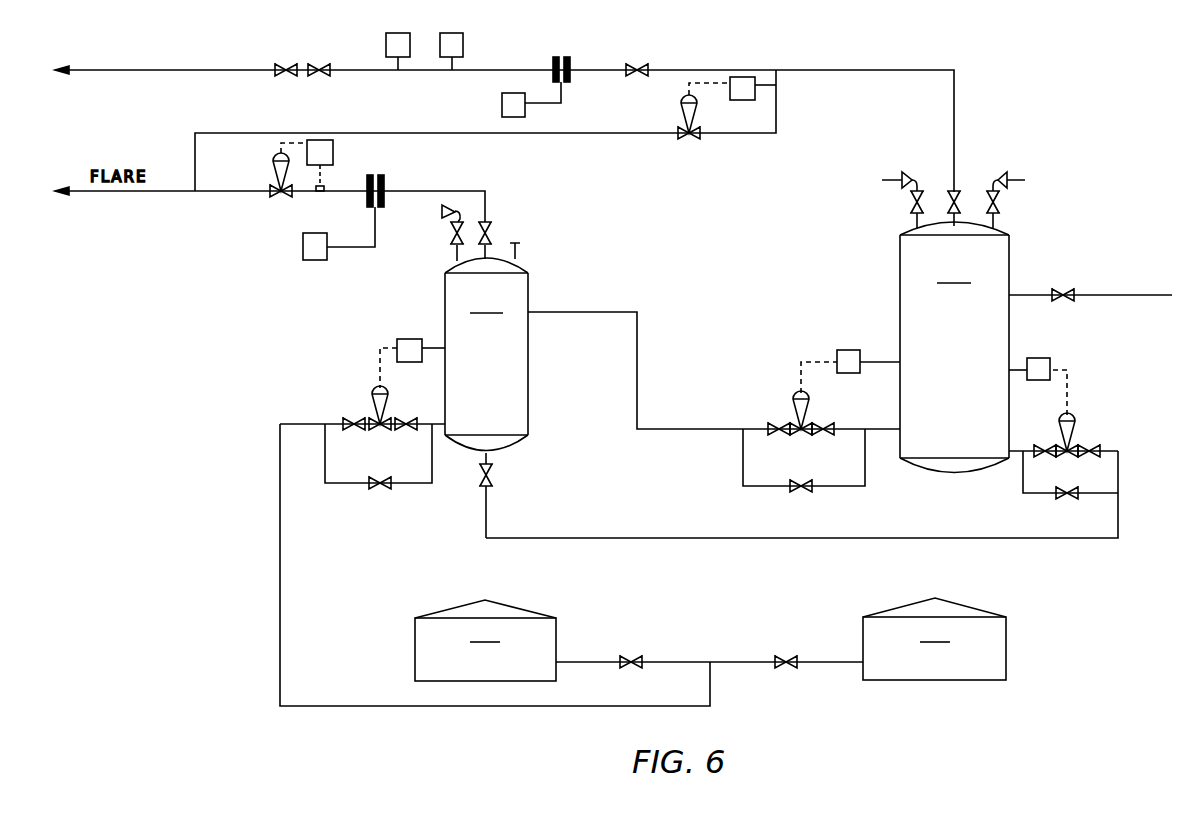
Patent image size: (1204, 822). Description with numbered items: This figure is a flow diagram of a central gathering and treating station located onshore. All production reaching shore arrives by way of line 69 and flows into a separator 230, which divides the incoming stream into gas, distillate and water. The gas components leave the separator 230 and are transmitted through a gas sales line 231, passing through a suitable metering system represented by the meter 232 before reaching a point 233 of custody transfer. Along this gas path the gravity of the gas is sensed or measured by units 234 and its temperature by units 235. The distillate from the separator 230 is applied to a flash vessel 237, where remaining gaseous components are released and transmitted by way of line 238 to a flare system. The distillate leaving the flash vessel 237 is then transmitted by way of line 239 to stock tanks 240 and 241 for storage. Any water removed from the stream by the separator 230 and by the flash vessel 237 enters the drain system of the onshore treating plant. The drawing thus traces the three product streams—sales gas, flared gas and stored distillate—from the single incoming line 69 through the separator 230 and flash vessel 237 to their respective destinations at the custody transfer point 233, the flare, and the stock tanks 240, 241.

The line 69 is at (1140, 297).
The separator 230 is at (953, 322).
The gas sales line 231 is at (828, 69).
The meter 232 is at (502, 110).
The point of custody transfer 233 is at (415, 72).
The units 234 is at (386, 50).
The units 235 is at (464, 52).
The flash vessel 237 is at (486, 398).
The line 238 is at (408, 191).
The line 239 is at (283, 569).
The stock tank 240 is at (485, 640).
The stock tank 241 is at (934, 639).